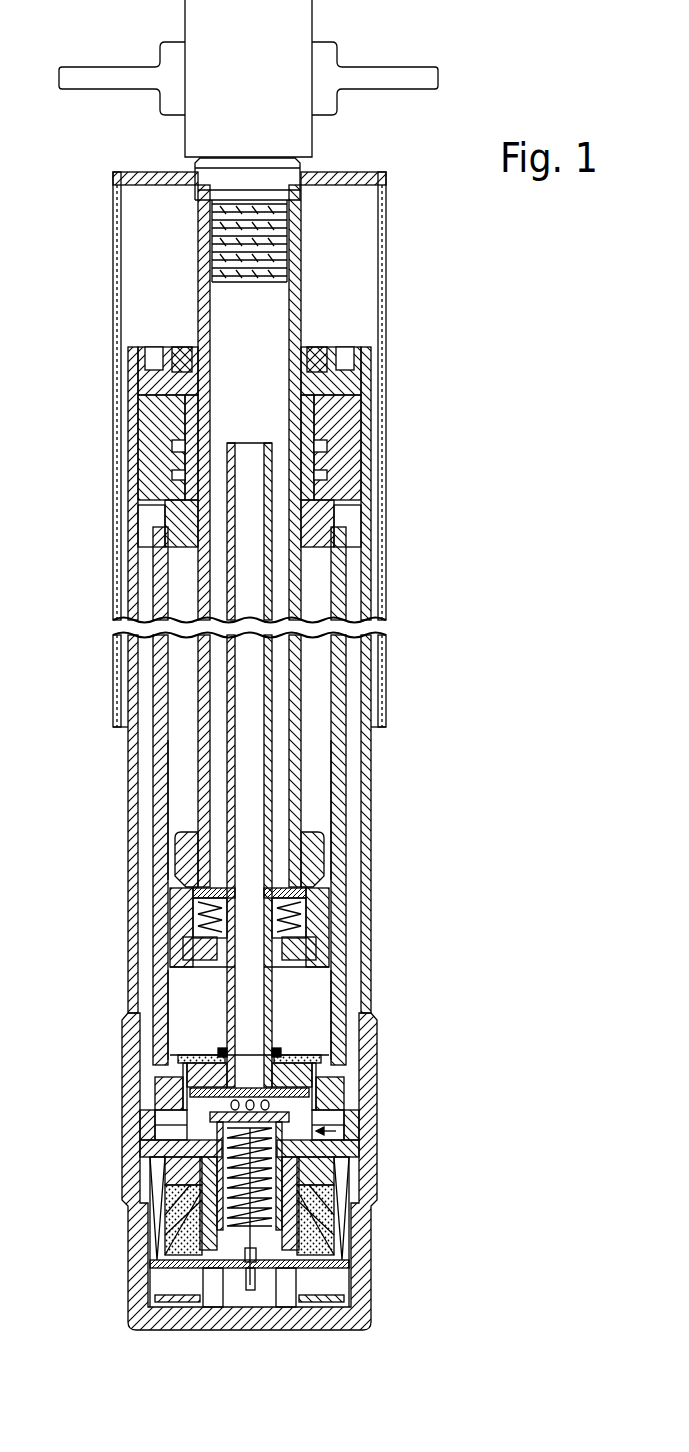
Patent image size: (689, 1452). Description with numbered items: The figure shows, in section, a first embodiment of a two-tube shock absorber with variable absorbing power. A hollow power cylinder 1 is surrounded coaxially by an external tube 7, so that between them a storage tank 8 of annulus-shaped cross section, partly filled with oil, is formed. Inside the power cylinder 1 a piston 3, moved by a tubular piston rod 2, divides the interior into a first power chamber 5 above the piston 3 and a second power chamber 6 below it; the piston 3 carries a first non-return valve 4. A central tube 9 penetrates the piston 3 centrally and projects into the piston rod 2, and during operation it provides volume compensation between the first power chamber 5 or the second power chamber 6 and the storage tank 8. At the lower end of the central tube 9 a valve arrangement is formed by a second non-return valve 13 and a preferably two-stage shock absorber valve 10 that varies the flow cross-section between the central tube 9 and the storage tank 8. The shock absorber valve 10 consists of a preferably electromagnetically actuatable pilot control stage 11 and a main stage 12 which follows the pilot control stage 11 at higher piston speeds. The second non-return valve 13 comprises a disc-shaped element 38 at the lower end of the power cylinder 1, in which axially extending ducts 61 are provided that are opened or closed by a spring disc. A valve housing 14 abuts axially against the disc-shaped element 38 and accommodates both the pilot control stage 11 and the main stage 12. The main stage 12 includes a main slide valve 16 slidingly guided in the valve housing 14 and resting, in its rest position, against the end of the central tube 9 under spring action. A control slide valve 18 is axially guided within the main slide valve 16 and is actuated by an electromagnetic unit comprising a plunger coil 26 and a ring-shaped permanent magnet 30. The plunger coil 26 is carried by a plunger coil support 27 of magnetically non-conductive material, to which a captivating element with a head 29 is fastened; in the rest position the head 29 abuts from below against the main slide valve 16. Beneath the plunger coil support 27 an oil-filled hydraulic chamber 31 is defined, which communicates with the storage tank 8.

The power cylinder 1 is at (335, 762).
The piston rod 2 is at (300, 329).
The piston 3 is at (315, 924).
The first non-return valve 4 is at (312, 891).
The first power chamber 5 is at (185, 810).
The second power chamber 6 is at (185, 985).
The external tube 7 is at (366, 812).
The storage tank 8 is at (145, 752).
The central tube 9 is at (272, 590).
The shock absorber valve 10 is at (355, 1132).
The pilot control stage 11 is at (165, 1206).
The main stage 12 is at (353, 1117).
The second non-return valve 13 is at (299, 1049).
The valve housing 14 is at (168, 1148).
The main slide valve 16 is at (168, 1180).
The control slide valve 18 is at (358, 1165).
The plunger coil 26 is at (368, 1229).
The plunger coil support 27 is at (182, 1270).
The head 29 is at (187, 1127).
The permanent magnet 30 is at (320, 1243).
The hydraulic chamber 31 is at (332, 1283).
The disc-shaped element 38 is at (352, 1100).
The ducts 61 is at (180, 1080).